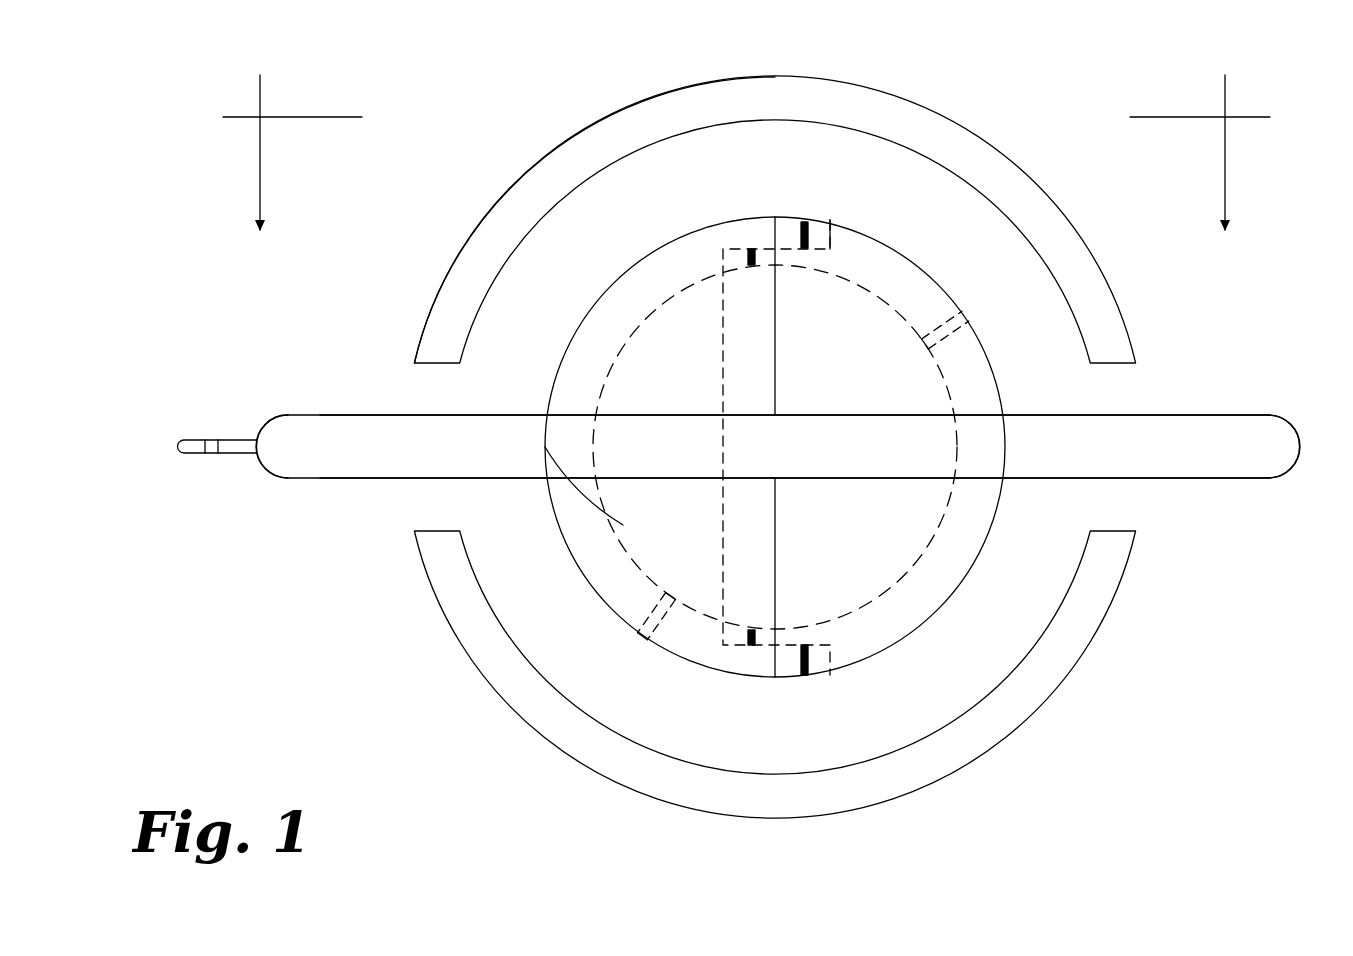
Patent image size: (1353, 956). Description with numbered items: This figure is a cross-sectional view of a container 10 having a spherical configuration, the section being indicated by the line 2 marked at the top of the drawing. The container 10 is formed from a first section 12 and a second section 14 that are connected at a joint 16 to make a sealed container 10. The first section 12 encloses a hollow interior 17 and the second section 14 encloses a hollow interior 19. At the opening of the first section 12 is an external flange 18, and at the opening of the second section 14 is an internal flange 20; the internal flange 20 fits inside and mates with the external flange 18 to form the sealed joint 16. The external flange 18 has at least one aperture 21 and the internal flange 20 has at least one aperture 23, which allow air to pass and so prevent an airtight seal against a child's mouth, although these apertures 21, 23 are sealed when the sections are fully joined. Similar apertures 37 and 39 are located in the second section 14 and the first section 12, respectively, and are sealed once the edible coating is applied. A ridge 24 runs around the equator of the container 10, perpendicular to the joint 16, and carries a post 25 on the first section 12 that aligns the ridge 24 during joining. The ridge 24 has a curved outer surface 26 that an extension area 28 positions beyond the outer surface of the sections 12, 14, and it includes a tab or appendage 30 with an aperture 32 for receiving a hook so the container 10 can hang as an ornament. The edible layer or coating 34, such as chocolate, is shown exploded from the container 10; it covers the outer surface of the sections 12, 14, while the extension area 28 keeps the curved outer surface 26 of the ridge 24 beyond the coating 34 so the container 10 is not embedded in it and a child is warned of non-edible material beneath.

The section line 2- 2 is at (746, 151).
The container 10 is at (1084, 505).
The first section 12 is at (623, 297).
The second section 14 is at (878, 265).
The joint 16 is at (775, 217).
The hollow interior 17 is at (623, 525).
The external flange 18 is at (823, 230).
The hollow interior 19 is at (895, 537).
The internal flange 20 is at (733, 637).
The aperture 21 is at (752, 249).
The aperture 23 is at (804, 222).
The ridge 24 is at (650, 435).
The post 25 is at (762, 453).
The curved outer surface 26 is at (270, 417).
The extension area 28 is at (370, 368).
The tab or appendage 30 is at (183, 440).
The aperture 32 is at (211, 448).
The edible layer or coating 34 is at (1003, 188).
The aperture 37 is at (965, 317).
The aperture 39 is at (643, 637).